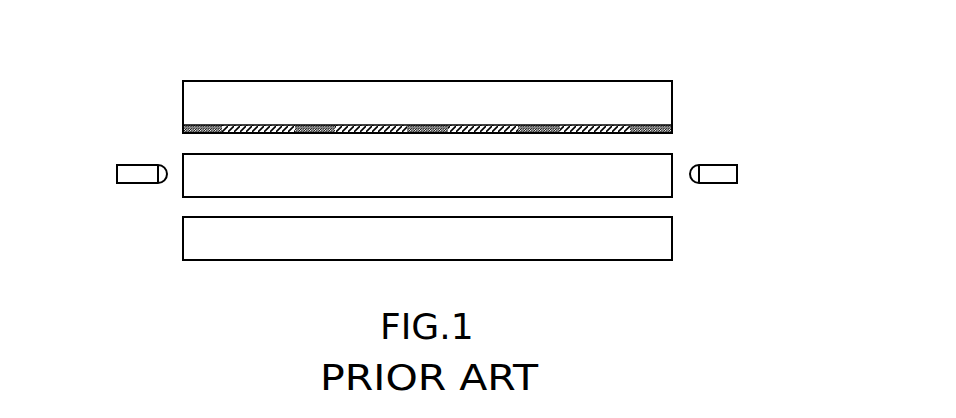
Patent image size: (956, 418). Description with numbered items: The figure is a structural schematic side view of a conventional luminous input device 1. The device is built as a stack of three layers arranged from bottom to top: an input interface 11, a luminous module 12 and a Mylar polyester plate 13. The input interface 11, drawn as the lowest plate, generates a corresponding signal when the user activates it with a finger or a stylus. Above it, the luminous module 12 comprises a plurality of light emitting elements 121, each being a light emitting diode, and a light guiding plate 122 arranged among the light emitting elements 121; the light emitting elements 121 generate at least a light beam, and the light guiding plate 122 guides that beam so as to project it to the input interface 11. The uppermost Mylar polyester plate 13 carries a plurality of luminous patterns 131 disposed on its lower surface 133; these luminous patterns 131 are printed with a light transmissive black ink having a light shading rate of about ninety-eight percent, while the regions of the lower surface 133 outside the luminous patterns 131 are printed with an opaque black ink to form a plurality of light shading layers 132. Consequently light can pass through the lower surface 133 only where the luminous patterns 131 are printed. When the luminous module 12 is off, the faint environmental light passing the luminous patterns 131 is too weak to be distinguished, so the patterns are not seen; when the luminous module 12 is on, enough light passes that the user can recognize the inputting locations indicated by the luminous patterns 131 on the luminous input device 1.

The luminous input device 1 is at (574, 28).
The input interface 11 is at (623, 250).
The luminous module 12 is at (432, 142).
The light emitting elements 121 is at (163, 122).
The light guiding plate 122 is at (193, 160).
The Mylar polyester plate 13 is at (452, 90).
The luminous patterns 131 is at (434, 90).
The light shading layers 132 is at (418, 124).
The lower surface 133 is at (573, 124).